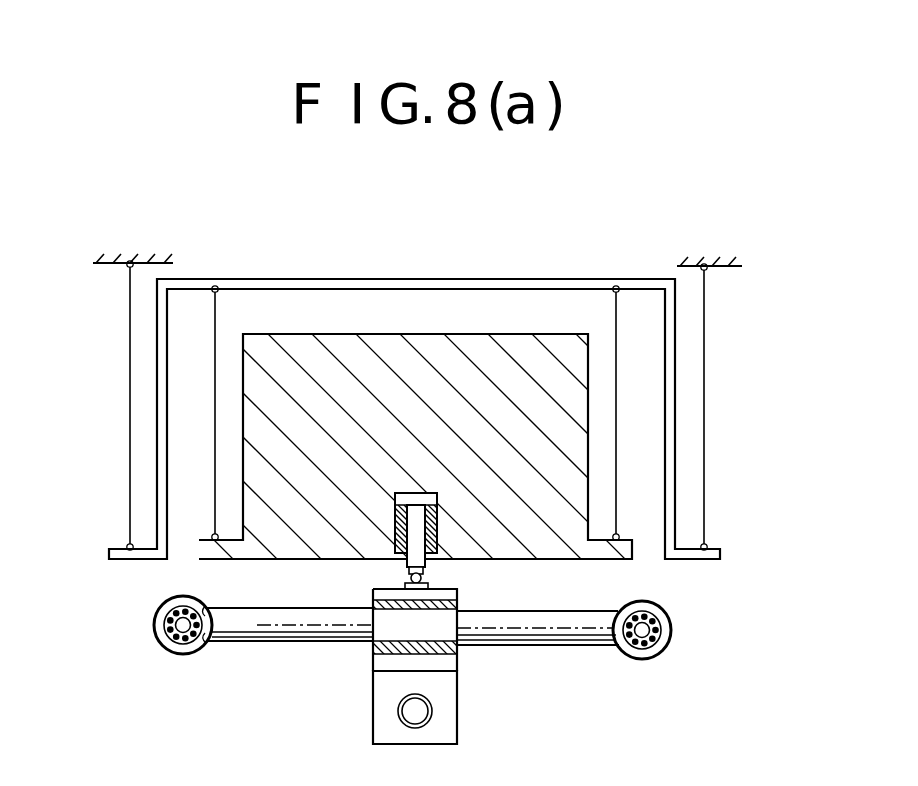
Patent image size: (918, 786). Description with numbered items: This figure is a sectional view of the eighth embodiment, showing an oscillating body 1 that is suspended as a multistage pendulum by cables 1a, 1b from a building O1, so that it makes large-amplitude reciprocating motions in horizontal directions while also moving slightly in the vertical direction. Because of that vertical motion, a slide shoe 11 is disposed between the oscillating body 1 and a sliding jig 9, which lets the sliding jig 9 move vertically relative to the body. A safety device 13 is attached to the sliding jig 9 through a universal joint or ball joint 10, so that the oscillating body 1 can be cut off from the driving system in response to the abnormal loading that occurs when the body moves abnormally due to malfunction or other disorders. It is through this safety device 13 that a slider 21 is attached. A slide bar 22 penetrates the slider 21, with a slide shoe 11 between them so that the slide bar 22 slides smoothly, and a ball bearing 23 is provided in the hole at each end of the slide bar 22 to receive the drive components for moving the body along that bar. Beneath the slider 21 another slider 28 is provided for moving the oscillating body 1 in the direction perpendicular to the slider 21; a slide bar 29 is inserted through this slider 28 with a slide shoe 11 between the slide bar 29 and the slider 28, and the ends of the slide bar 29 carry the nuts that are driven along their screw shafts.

The oscillating body 1 is at (343, 341).
The cable 1a is at (704, 389).
The cable 1b is at (616, 319).
The building O1 is at (725, 269).
The sliding jig 9 is at (437, 498).
The ball joint 10 is at (432, 579).
The slide shoe 11 is at (427, 532).
The safety device 13 is at (405, 587).
The slider 21 is at (447, 664).
The slide bar 22 is at (550, 641).
The ball bearing 23 is at (655, 658).
The slider 28 is at (445, 733).
The slide bar 29 is at (403, 716).